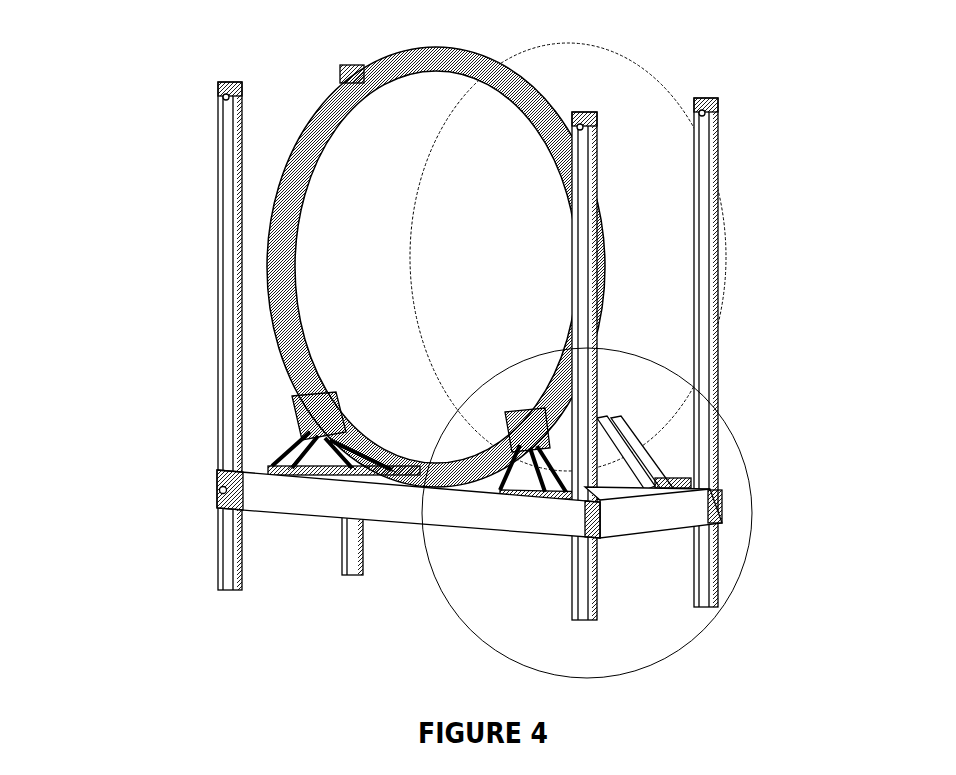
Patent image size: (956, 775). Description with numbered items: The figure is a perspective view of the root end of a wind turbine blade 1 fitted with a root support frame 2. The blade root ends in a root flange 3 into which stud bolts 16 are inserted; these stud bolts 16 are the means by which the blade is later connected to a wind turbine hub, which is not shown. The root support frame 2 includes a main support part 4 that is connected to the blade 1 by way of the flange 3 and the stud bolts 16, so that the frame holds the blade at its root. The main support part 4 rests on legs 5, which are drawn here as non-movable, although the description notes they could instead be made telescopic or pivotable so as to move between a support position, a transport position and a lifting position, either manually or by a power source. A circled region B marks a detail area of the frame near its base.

The blade 1 is at (447, 339).
The root support frame 2 is at (447, 367).
The root flange 3 is at (606, 255).
The main support part 4 is at (403, 522).
The legs 5 is at (220, 263).
The stud bolts 16 is at (330, 105).
The detail region B is at (733, 440).